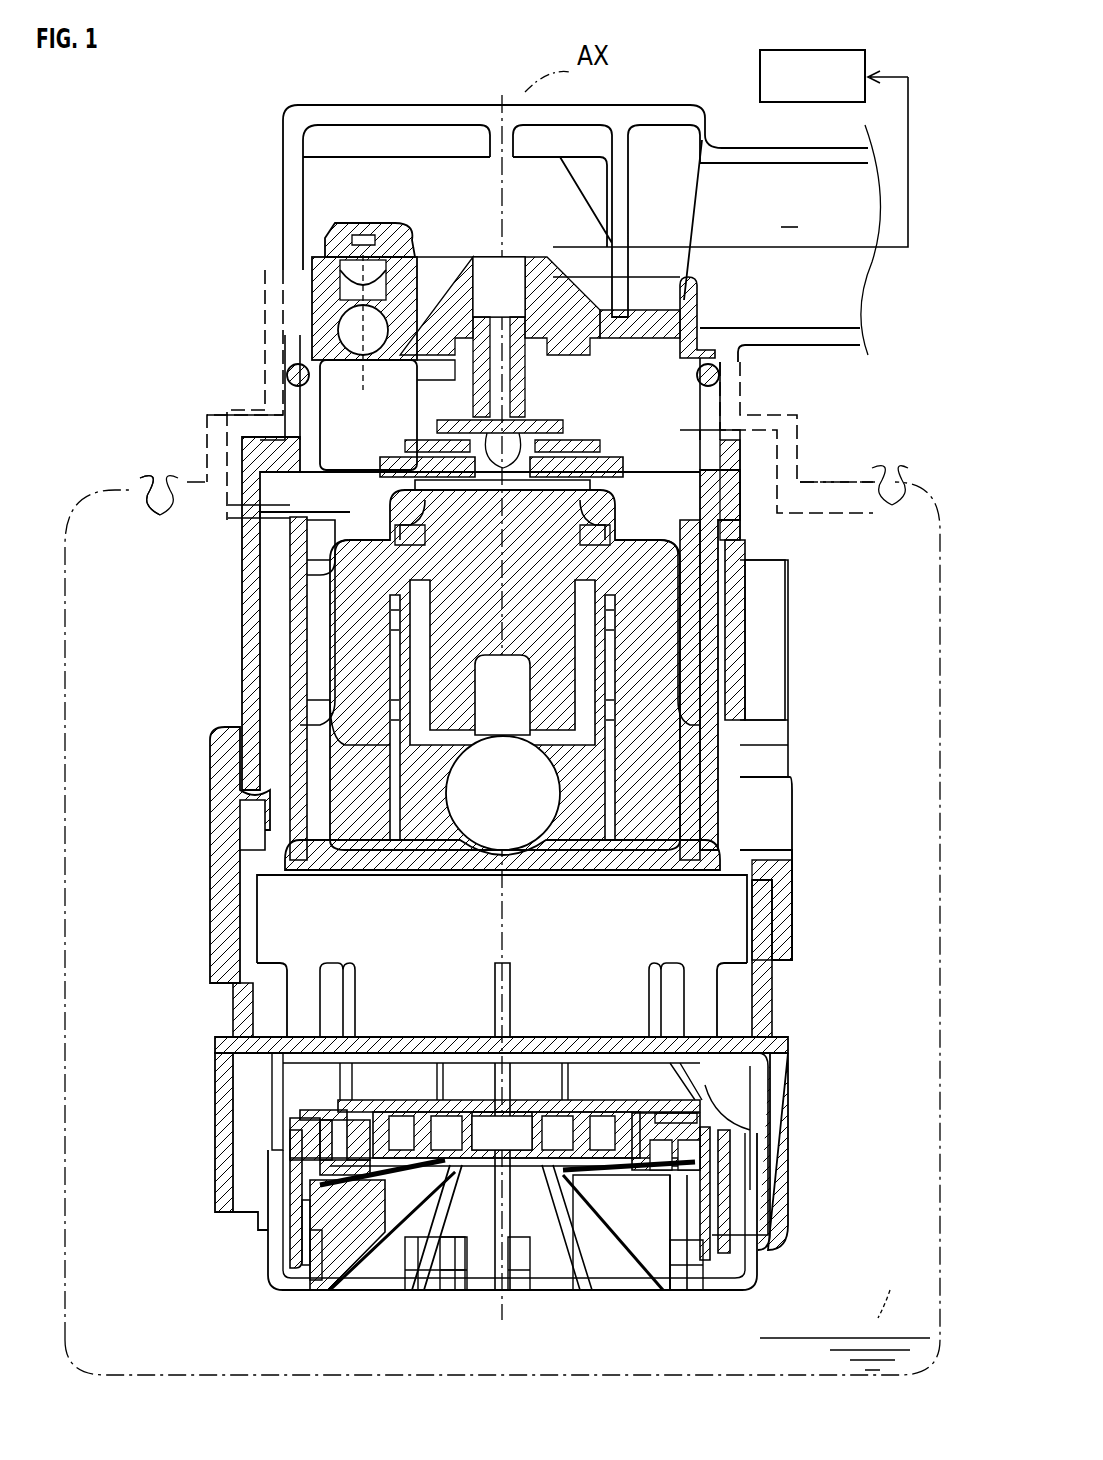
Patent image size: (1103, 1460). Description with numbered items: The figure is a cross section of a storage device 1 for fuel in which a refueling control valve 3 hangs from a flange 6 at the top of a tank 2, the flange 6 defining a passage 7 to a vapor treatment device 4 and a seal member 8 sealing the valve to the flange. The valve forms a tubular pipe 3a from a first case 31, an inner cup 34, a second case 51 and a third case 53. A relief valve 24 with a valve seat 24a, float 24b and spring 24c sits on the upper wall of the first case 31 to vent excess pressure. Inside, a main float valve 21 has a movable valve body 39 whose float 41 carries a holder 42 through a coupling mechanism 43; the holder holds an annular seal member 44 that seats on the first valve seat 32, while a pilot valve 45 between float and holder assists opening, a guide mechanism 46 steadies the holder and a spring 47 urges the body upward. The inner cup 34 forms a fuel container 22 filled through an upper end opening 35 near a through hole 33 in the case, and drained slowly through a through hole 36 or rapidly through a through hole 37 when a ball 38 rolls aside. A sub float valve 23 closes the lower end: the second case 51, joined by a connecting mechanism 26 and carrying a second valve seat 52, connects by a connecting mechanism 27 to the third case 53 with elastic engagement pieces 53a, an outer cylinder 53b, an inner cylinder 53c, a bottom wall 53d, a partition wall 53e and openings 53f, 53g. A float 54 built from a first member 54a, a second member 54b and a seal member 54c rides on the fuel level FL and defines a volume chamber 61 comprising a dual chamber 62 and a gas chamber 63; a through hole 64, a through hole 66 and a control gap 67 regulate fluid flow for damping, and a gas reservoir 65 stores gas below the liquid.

The storage device 1 is at (218, 98).
The tank 2 is at (80, 465).
The refueling control valve 3 is at (102, 265).
The pipe 3a is at (192, 858).
The vapor treatment device 4 is at (760, 58).
The flange 6 is at (143, 462).
The passage 7 is at (831, 240).
The seal member 8 is at (288, 372).
The main float valve 21 is at (190, 610).
The fuel container 22 is at (192, 745).
The sub float valve 23 is at (176, 1012).
The relief valve 24 is at (252, 212).
The valve seat 24a is at (345, 328).
The float 24b is at (340, 285).
The spring 24c is at (325, 250).
The connecting mechanism 26 is at (820, 922).
The connecting mechanism 27 is at (815, 1192).
The first case 31 is at (295, 640).
The first valve seat 32 is at (410, 378).
The through hole 33 is at (255, 510).
The inner cup 34 is at (315, 655).
The upper end opening 35 is at (300, 555).
The through hole 36 is at (332, 690).
The through hole 37 is at (460, 800).
The ball 38 is at (400, 775).
The movable valve body 39 is at (635, 507).
The float 41 is at (640, 635).
The holder 42 is at (725, 460).
The coupling mechanism 43 is at (630, 530).
The seal member 44 is at (700, 420).
The pilot valve 45 is at (558, 414).
The guide mechanism 46 is at (496, 222).
The spring 47 is at (660, 680).
The second case 51 is at (780, 1040).
The second valve seat 52 is at (760, 1085).
The third case 53 is at (290, 1260).
The elastic engagement pieces 53a is at (760, 1250).
The outer cylinder 53b is at (275, 1215).
The inner cylinder 53c is at (400, 1270).
The bottom wall 53d is at (345, 1245).
The partition wall 53e is at (445, 1275).
The openings 53f is at (480, 1280).
The openings 53g is at (295, 1255).
The float 54 is at (745, 1128).
The first member 54a is at (300, 1135).
The second member 54b is at (300, 1112).
The seal member 54c is at (340, 1135).
The volume chamber 61 is at (515, 1150).
The dual chamber 62 is at (520, 1100).
The gas chamber 63 is at (600, 1100).
The through hole 64 is at (495, 1100).
The gas reservoir 65 is at (625, 1200).
The through hole 66 is at (470, 1110).
The control gap 67 is at (300, 1270).
The fuel level FL is at (845, 1313).